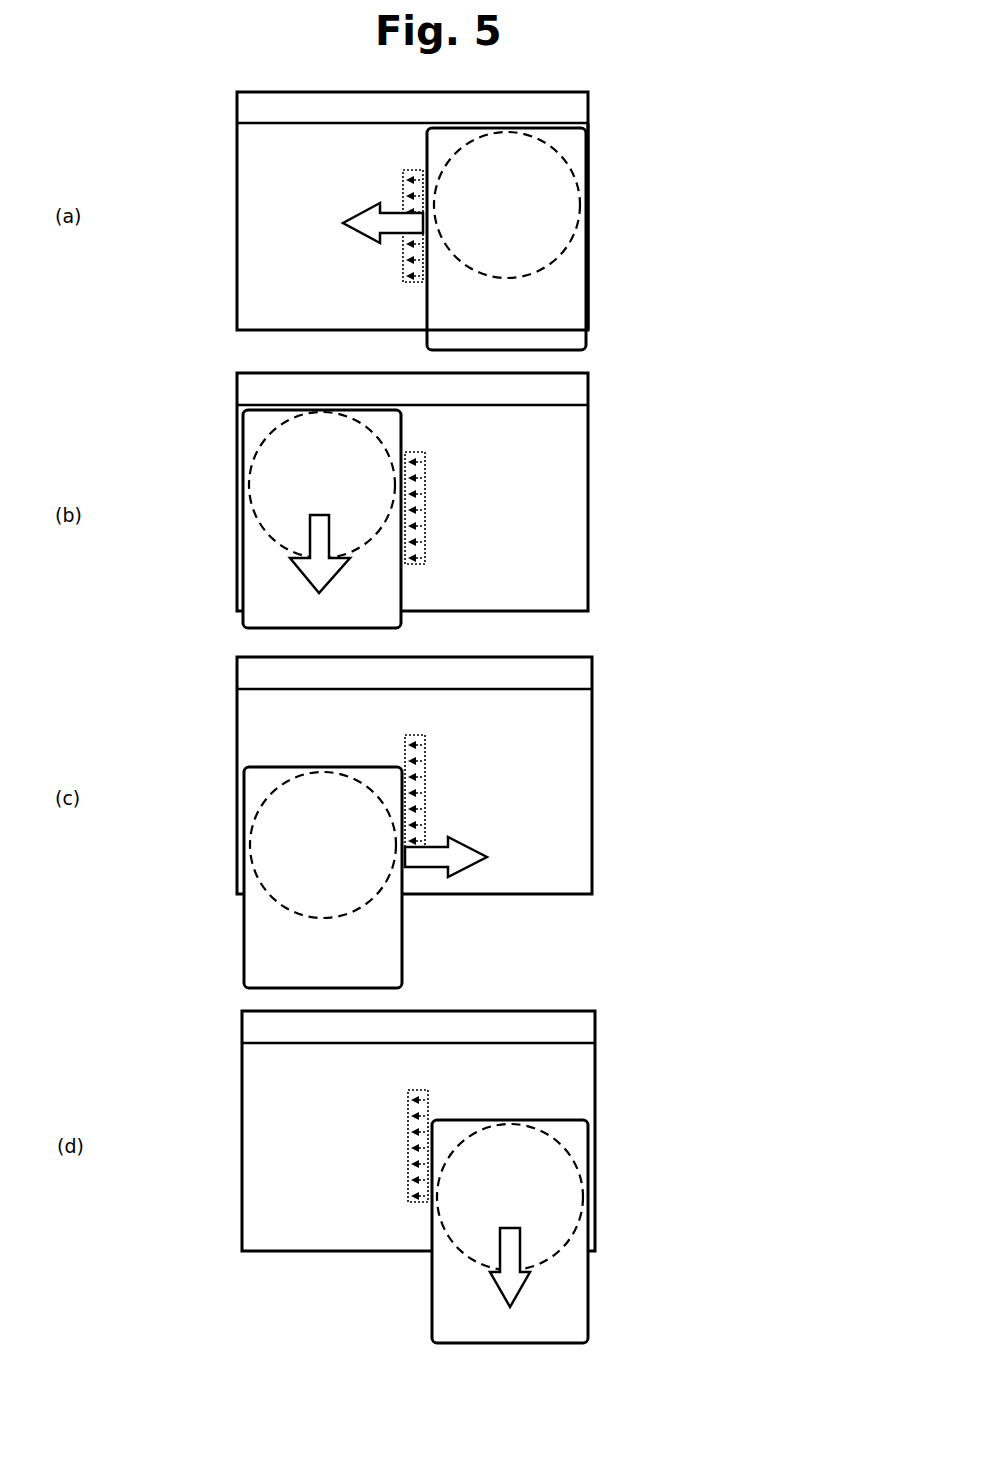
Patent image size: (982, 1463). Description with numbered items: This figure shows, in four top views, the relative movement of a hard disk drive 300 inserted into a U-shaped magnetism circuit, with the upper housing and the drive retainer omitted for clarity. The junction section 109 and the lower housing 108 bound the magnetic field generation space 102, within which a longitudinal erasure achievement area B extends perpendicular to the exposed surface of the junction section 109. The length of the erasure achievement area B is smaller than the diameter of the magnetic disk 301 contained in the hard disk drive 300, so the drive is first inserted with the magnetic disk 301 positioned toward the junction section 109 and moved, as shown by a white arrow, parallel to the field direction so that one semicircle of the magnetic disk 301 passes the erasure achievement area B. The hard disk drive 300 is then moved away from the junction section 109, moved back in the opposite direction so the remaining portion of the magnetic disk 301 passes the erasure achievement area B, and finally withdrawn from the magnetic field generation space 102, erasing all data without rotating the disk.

The magnetic field generation space 102 is at (270, 173).
The lower housing 108 is at (588, 192).
The junction section 109 is at (588, 102).
The hard disk drive 300 is at (567, 317).
The magnetic disk 301 is at (572, 243).
The erasure achievement area B is at (403, 268).